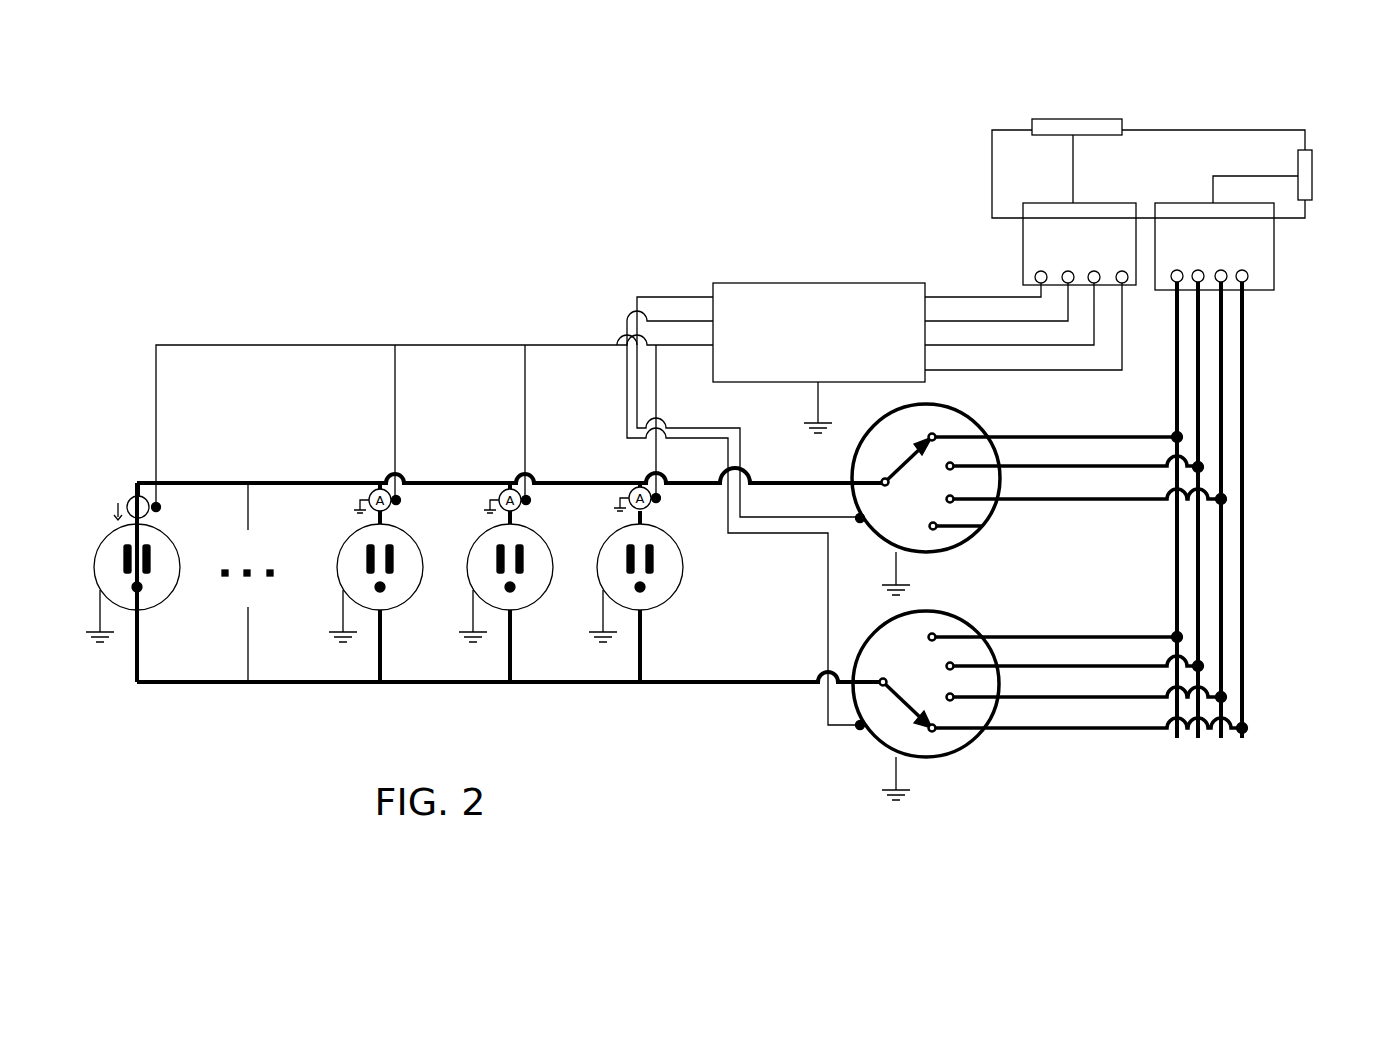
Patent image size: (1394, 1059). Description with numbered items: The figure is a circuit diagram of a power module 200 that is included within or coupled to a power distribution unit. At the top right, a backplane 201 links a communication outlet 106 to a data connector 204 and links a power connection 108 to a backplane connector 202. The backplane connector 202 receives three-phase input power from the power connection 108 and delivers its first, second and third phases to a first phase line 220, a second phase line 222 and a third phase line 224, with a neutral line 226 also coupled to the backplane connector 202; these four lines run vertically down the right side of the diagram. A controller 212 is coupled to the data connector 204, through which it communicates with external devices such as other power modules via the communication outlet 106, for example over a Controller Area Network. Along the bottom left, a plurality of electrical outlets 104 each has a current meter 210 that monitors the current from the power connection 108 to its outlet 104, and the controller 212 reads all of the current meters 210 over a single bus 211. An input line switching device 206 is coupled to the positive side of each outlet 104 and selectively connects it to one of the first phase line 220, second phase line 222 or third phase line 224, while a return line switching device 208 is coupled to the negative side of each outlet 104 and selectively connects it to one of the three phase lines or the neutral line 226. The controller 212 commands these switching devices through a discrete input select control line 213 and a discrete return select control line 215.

The power module 200 is at (448, 228).
The electrical outlet 104 is at (158, 593).
The current meter 210 is at (148, 512).
The single bus 211 is at (577, 345).
The controller 212 is at (818, 288).
The input select control line 213 is at (713, 430).
The return select control line 215 is at (828, 708).
The data connector 204 is at (1033, 258).
The backplane connector 202 is at (1268, 280).
The backplane 201 is at (1010, 183).
The communication outlet 106 is at (1105, 128).
The power connection 108 is at (1312, 165).
The input line switching device 206 is at (975, 533).
The return line switching device 208 is at (977, 740).
The first phase line 220 is at (1177, 738).
The second phase line 222 is at (1198, 738).
The third phase line 224 is at (1221, 738).
The neutral line 226 is at (1242, 738).